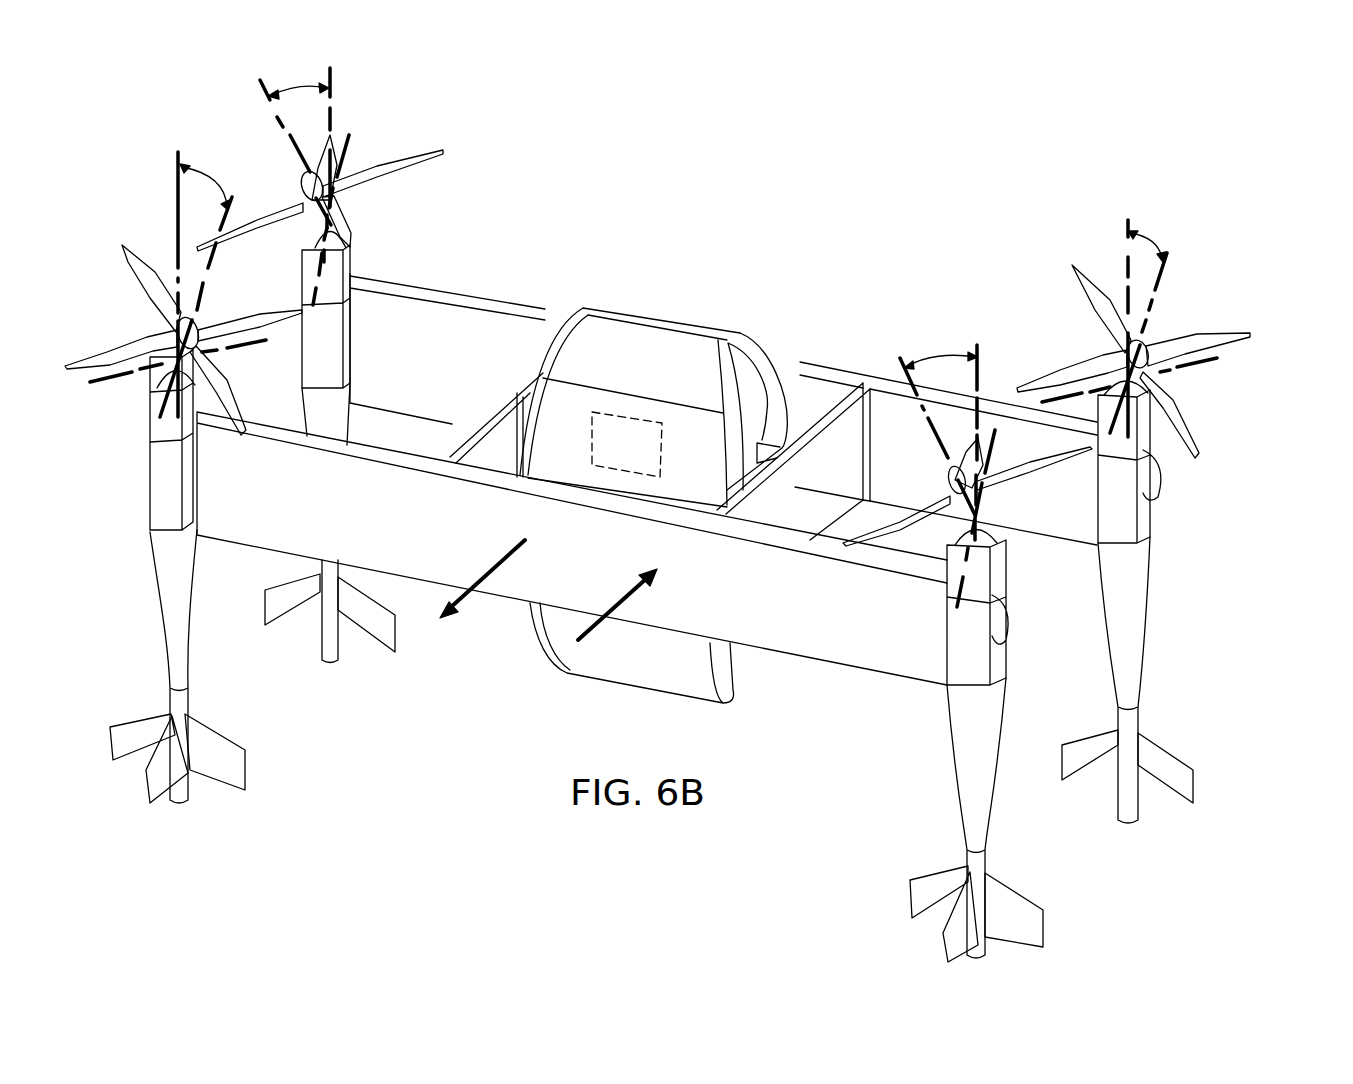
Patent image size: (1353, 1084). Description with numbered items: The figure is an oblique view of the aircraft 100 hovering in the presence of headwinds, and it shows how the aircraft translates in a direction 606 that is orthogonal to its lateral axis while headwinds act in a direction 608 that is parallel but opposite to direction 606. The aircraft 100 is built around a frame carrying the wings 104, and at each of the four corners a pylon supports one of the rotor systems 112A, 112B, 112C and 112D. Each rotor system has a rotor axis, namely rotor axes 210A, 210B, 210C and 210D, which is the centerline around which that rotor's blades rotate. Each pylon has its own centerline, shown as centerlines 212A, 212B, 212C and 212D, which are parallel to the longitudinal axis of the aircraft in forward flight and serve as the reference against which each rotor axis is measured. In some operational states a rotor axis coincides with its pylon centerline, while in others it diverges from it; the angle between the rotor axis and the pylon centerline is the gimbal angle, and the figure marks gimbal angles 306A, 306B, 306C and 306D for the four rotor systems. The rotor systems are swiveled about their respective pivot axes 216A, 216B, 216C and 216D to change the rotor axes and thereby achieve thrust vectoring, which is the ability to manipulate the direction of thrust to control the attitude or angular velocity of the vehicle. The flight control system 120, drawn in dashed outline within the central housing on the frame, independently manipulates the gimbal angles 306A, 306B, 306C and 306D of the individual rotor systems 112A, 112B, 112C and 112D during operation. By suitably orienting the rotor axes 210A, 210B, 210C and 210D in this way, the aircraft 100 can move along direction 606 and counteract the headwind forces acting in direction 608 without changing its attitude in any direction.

The aircraft 100 is at (832, 120).
The wings 104 is at (825, 360).
The flight control system 120 is at (620, 413).
The rotor system 112A is at (1034, 482).
The rotor system 112B is at (1241, 348).
The rotor system 112C is at (398, 182).
The rotor system 112D is at (118, 341).
The rotor axis 210A is at (933, 437).
The rotor axis 210B is at (1160, 285).
The rotor axis 210C is at (258, 90).
The rotor axis 210D is at (211, 268).
The centerline of pylon 212A is at (981, 363).
The centerline of pylon 212B is at (1127, 260).
The centerline of pylon 212C is at (333, 74).
The centerline of pylon 212D is at (178, 240).
The pivot axis 216A is at (957, 583).
The pivot axis 216B is at (1203, 368).
The pivot axis 216C is at (352, 140).
The pivot axis 216D is at (108, 382).
The gimbal angle 306A is at (940, 355).
The gimbal angle 306B is at (1172, 228).
The gimbal angle 306C is at (293, 86).
The gimbal angle 306D is at (218, 195).
The direction 606 is at (483, 573).
The direction 608 is at (620, 605).